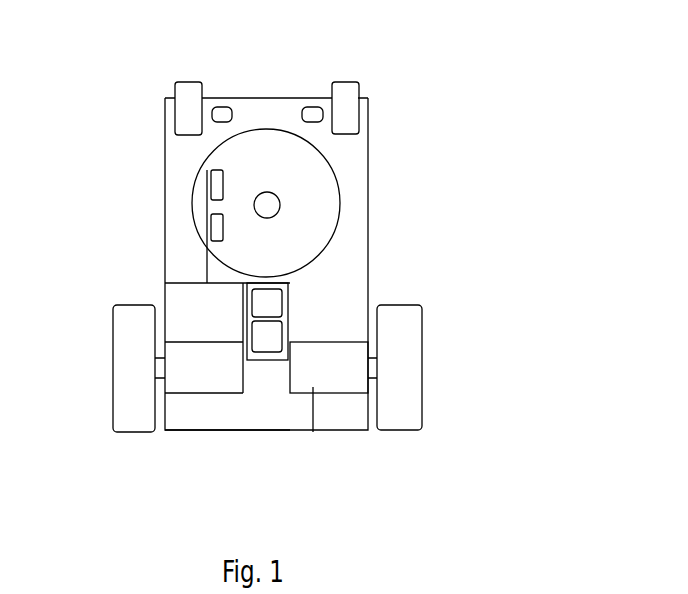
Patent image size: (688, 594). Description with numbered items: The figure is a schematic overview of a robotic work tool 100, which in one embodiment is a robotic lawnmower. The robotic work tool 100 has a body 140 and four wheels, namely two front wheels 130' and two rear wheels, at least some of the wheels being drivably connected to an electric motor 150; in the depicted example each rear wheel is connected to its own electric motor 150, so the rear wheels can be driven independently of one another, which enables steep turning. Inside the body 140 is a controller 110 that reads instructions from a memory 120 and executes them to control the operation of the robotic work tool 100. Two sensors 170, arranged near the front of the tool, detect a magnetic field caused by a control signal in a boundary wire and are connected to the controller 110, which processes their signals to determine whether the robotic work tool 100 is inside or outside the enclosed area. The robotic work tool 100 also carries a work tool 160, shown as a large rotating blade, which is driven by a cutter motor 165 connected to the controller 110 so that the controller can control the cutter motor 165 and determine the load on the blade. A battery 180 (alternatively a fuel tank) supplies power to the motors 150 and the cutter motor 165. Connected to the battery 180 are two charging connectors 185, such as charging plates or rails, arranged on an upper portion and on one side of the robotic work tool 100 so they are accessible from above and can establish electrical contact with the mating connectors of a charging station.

The robotic work tool 100 is at (148, 128).
The controller 110 is at (292, 303).
The memory 120 is at (298, 336).
The front wheels 130' is at (303, 87).
The body 140 is at (200, 432).
The electric motor 150 is at (245, 393).
The work tool 160 is at (342, 196).
The cutter motor 165 is at (281, 191).
The sensors 170 is at (299, 110).
The battery 180 is at (165, 302).
The charging connectors 185 is at (207, 212).